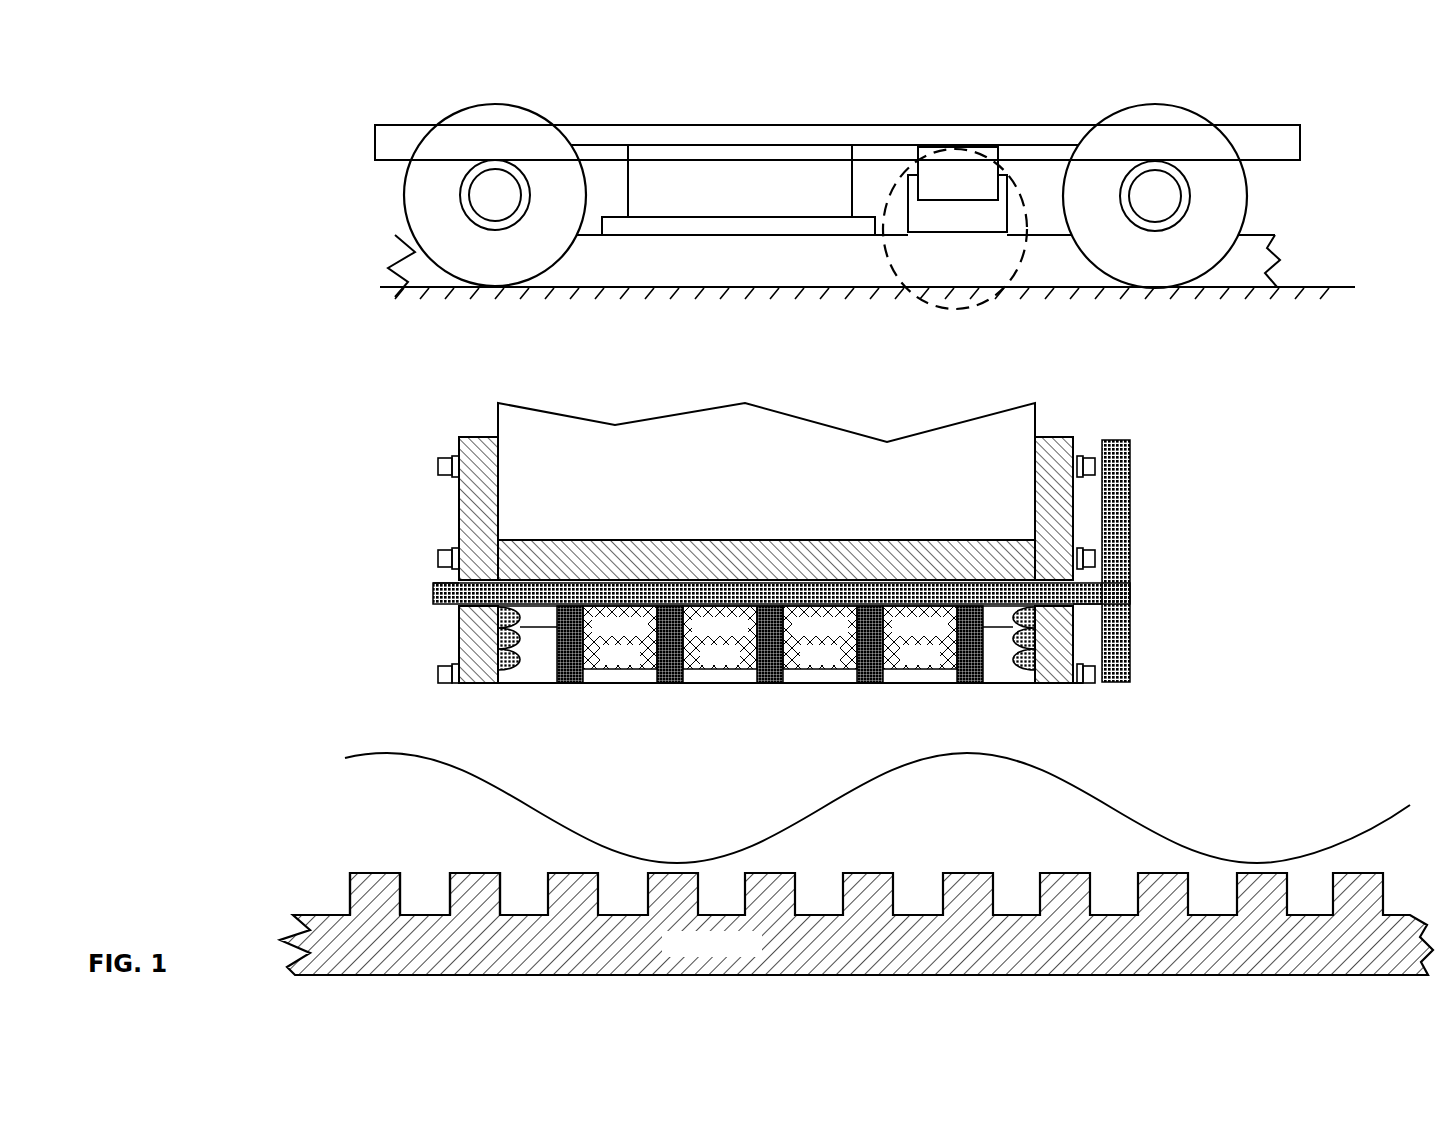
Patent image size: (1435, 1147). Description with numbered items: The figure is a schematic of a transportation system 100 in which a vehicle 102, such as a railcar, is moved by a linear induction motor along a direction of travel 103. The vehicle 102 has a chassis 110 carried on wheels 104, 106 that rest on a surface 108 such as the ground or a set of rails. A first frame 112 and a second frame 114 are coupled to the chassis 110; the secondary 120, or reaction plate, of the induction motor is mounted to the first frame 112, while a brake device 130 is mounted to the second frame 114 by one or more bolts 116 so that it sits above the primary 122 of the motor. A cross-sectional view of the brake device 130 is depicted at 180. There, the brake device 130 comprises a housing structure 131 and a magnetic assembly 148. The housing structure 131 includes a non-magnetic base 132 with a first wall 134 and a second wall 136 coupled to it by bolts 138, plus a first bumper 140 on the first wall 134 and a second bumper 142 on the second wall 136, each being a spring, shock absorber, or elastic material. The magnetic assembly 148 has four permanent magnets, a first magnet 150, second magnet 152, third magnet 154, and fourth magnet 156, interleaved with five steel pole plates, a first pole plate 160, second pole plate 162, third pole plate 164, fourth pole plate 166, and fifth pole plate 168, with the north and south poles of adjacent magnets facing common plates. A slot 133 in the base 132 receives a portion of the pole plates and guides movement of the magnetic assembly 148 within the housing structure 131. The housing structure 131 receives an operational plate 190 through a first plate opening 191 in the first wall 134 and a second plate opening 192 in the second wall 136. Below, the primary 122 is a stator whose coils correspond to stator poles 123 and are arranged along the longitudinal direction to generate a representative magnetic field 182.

The transportation system 100 is at (717, 191).
The vehicle 102 is at (760, 430).
The direction of travel 103 is at (226, 493).
The wheel 104 is at (461, 186).
The wheel 106 is at (1132, 187).
The surface 108 is at (1338, 269).
The chassis 110 is at (825, 193).
The first frame 112 is at (740, 181).
The second frame 114 is at (766, 343).
The bolt 116 is at (758, 446).
The secondary 120 is at (738, 208).
The primary 122 is at (856, 588).
The stator pole 123 is at (398, 865).
The brake device 130 is at (1113, 277).
The housing structure 131 is at (700, 554).
The base 132 is at (766, 541).
The slot 133 is at (766, 707).
The first wall 134 is at (413, 560).
The second wall 136 is at (996, 560).
The bolt 138 is at (782, 620).
The first bumper 140 is at (447, 664).
The second bumper 142 is at (1097, 676).
The magnetic assembly 148 is at (771, 726).
The first magnet 150 is at (620, 637).
The second magnet 152 is at (720, 637).
The third magnet 154 is at (820, 637).
The fourth magnet 156 is at (920, 637).
The first pole plate 160 is at (596, 675).
The second pole plate 162 is at (647, 659).
The third pole plate 164 is at (746, 659).
The fourth pole plate 166 is at (844, 664).
The fifth pole plate 168 is at (945, 659).
The cross-sectional view of the brake device 180 is at (624, 264).
The magnetic field 182 is at (877, 808).
The operational plate 190 is at (896, 561).
The first plate opening 191 is at (312, 569).
The second plate opening 192 is at (1204, 629).